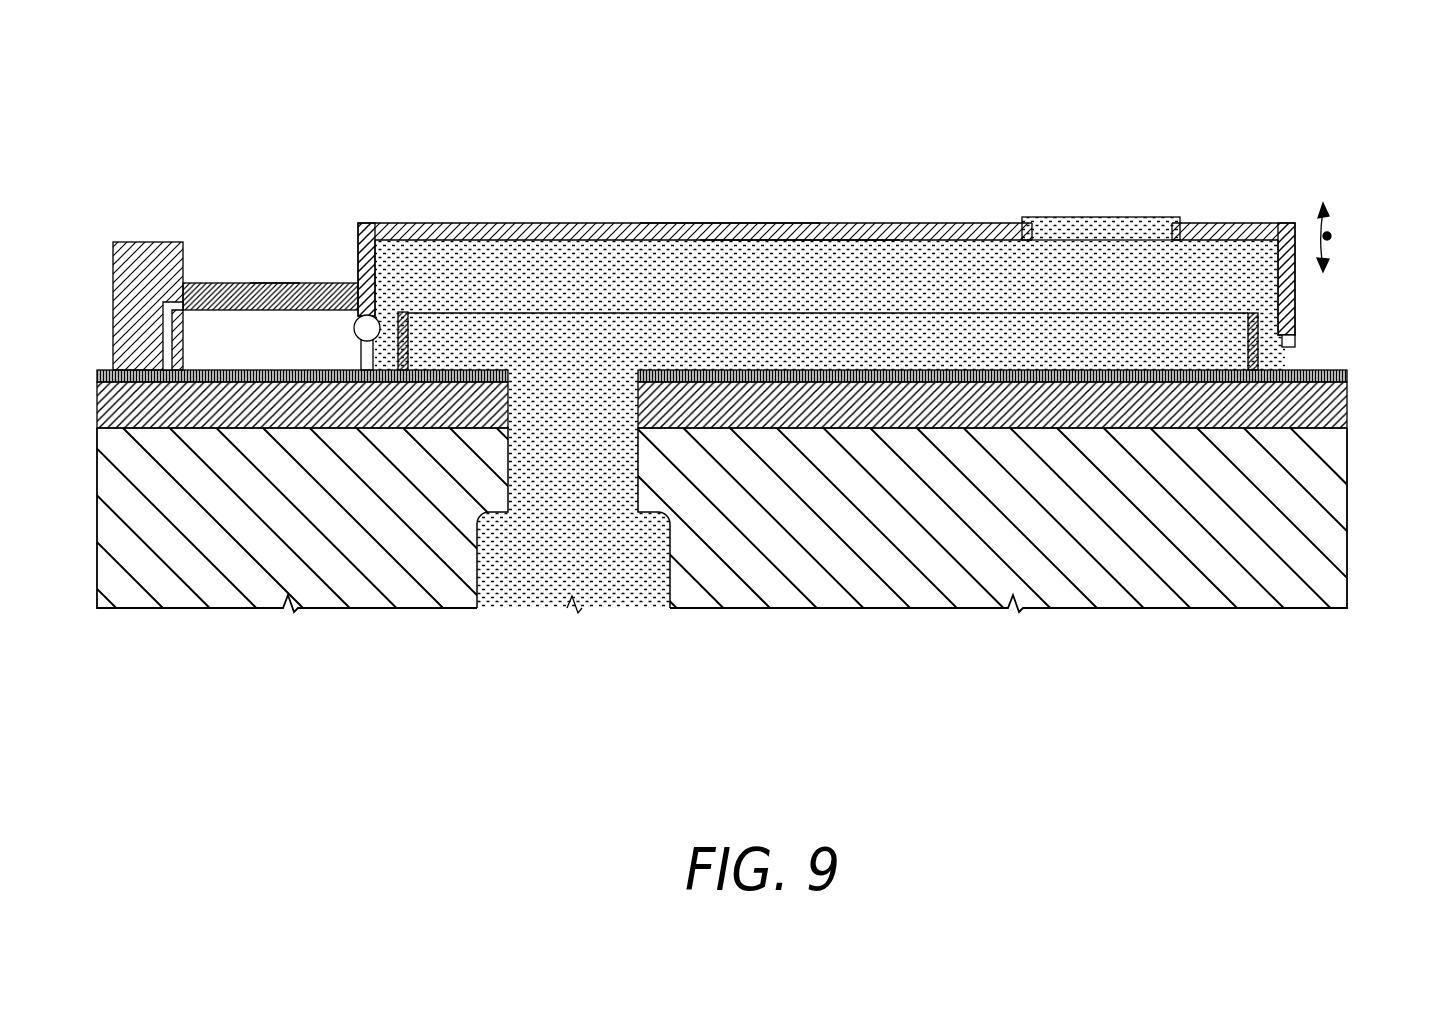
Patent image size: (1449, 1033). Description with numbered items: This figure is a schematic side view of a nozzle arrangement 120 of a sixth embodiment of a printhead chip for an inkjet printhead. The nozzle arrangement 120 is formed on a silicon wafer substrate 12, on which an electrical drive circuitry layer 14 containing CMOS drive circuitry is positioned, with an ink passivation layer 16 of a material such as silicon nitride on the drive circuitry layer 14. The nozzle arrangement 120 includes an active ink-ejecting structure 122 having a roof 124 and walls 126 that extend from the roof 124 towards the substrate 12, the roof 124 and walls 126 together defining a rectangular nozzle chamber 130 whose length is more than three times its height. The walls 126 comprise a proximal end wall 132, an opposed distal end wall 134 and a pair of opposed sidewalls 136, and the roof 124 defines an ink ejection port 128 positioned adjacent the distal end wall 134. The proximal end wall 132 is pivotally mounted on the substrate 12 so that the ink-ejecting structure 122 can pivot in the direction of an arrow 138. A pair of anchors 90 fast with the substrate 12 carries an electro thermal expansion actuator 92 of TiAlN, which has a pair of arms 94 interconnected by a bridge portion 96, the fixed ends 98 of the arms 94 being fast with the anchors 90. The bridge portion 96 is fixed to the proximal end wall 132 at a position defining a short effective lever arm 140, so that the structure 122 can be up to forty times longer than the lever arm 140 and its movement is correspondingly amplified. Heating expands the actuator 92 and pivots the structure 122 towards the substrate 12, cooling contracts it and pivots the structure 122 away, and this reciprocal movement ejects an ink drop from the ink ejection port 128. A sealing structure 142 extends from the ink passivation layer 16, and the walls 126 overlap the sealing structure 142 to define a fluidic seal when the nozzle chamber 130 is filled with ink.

The silicon wafer substrate 12 is at (1349, 523).
The electrical drive circuitry layer 14 is at (1349, 410).
The ink passivation layer 16 is at (1349, 377).
The anchors 90 is at (150, 242).
The electro thermal expansion actuator 92 is at (228, 283).
The arms 94 is at (270, 283).
The bridge portion 96 is at (358, 318).
The fixed ends 98 is at (168, 302).
The nozzle arrangement 120 is at (1006, 132).
The active ink-ejecting structure 122 is at (622, 226).
The roof 124 is at (727, 226).
The walls 126 is at (510, 258).
The ink ejection port 128 is at (1143, 201).
The nozzle chamber 130 is at (905, 268).
The proximal end wall 132 is at (357, 270).
The distal end wall 134 is at (1297, 297).
The sidewalls 136 is at (795, 254).
The arrow 138 is at (1330, 236).
The effective lever arm 140 is at (378, 318).
The sealing structure 142 is at (1297, 343).